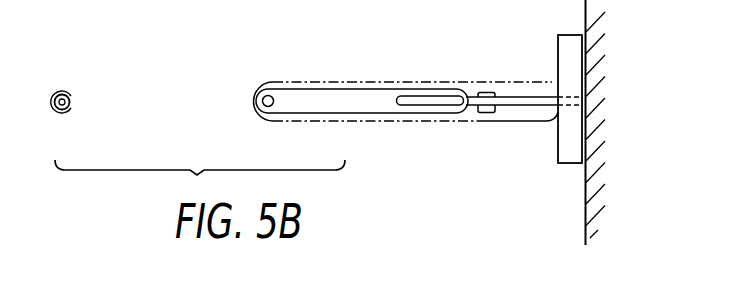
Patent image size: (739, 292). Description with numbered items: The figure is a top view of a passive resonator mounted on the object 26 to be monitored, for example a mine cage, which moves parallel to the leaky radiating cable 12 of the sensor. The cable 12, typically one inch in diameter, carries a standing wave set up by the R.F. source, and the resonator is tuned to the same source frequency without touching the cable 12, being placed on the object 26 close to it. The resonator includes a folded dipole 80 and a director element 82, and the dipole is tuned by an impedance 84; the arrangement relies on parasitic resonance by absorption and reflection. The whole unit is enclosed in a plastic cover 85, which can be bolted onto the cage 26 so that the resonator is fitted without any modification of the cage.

The leaky radiating cable 12 is at (69, 103).
The director element 82 is at (268, 95).
The plastic cover 85 is at (423, 82).
The folded dipole 80 is at (422, 106).
The impedance 84 is at (492, 113).
The object to be monitored 26 is at (652, 104).